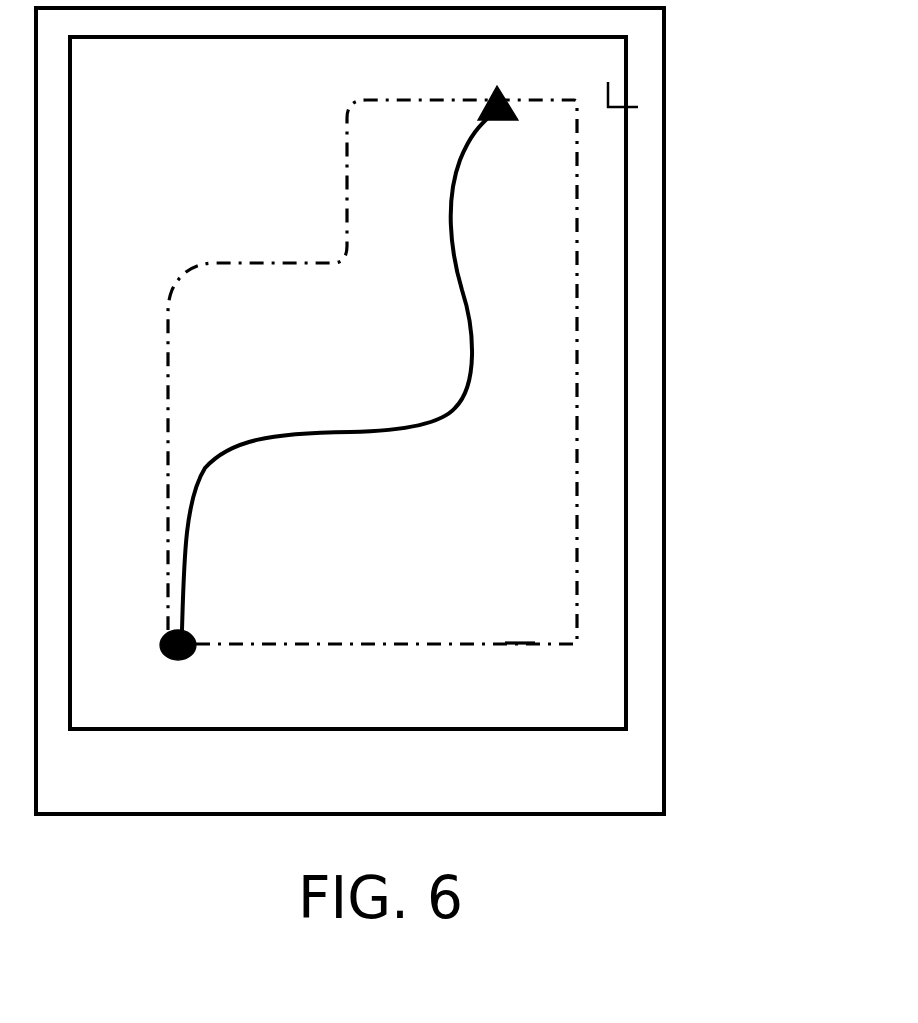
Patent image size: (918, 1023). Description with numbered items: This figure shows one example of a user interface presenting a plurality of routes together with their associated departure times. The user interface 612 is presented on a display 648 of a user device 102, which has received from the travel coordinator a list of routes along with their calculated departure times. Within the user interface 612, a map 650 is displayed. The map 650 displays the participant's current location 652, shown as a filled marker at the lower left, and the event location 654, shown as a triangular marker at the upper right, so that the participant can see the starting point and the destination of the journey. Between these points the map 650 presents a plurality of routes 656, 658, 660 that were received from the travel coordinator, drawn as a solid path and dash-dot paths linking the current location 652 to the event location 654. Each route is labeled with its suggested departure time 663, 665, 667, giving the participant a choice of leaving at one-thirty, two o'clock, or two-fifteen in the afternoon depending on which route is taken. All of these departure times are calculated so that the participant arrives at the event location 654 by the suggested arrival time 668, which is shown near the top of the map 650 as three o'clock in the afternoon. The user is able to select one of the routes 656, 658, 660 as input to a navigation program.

The user device 102 is at (668, 652).
The user interface 612 is at (605, 486).
The display 648 is at (631, 356).
The map 650 is at (612, 98).
The participant's current location 652 is at (178, 661).
The event location 654 is at (510, 100).
The route 656 is at (270, 450).
The route 658 is at (350, 199).
The route 660 is at (447, 648).
The suggested departure time 663 is at (502, 410).
The suggested departure time 665 is at (323, 315).
The suggested departure time 667 is at (523, 630).
The suggested arrival time 668 is at (222, 125).